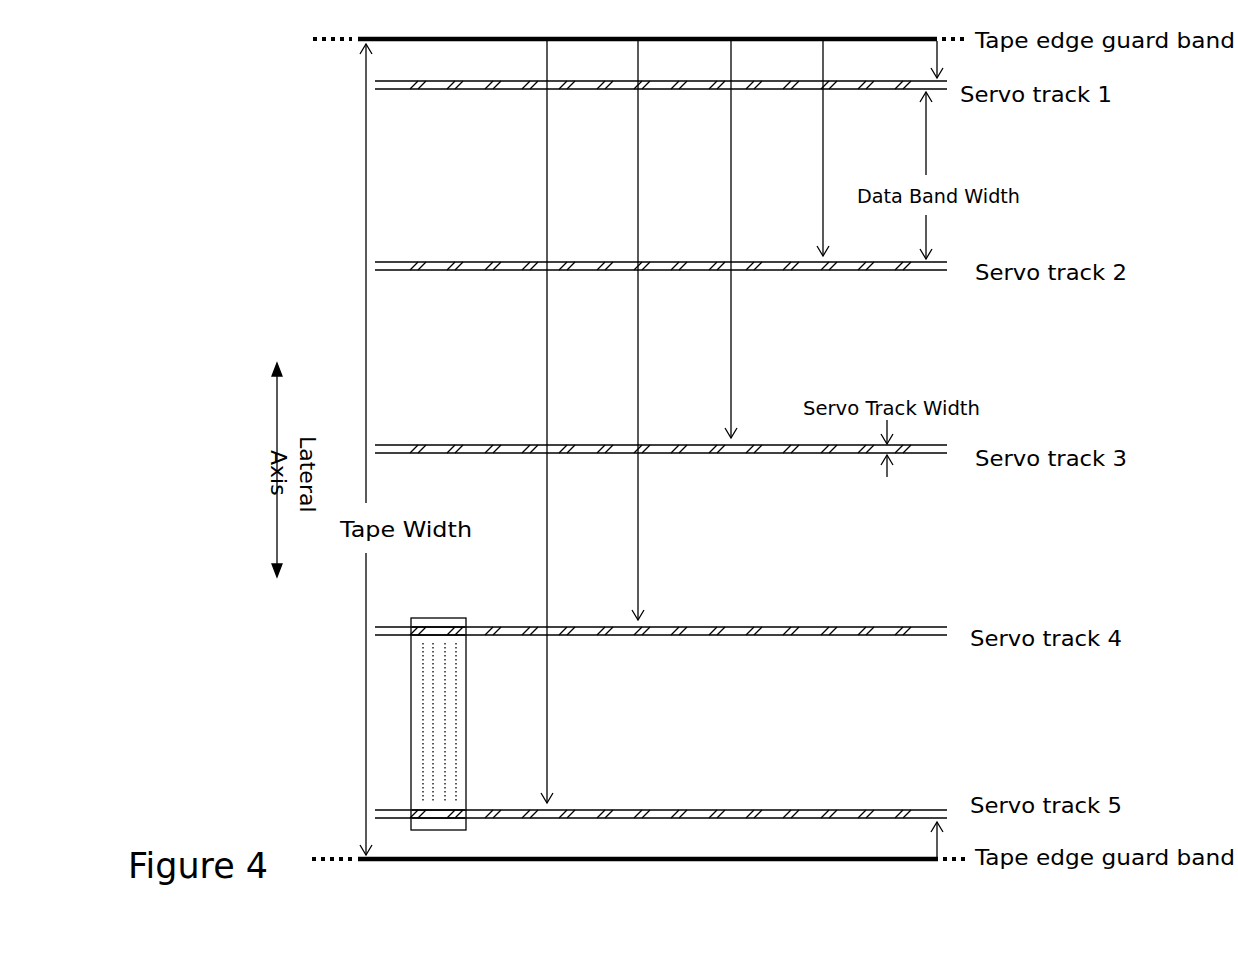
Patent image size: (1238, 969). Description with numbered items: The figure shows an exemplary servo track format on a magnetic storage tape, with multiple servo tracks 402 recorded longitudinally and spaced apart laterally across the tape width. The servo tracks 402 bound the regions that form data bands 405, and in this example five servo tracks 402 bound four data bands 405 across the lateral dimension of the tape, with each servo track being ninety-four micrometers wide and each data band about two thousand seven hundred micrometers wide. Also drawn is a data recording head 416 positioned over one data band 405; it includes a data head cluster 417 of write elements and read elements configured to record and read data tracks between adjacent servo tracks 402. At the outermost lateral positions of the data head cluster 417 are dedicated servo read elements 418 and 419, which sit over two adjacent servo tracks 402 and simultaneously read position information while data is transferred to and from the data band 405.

The servo tracks 402 is at (378, 81).
The data bands 405 is at (383, 130).
The data recording head 416 is at (449, 604).
The data head cluster 417 is at (423, 683).
The servo read element 418 is at (422, 635).
The servo read element 419 is at (437, 810).